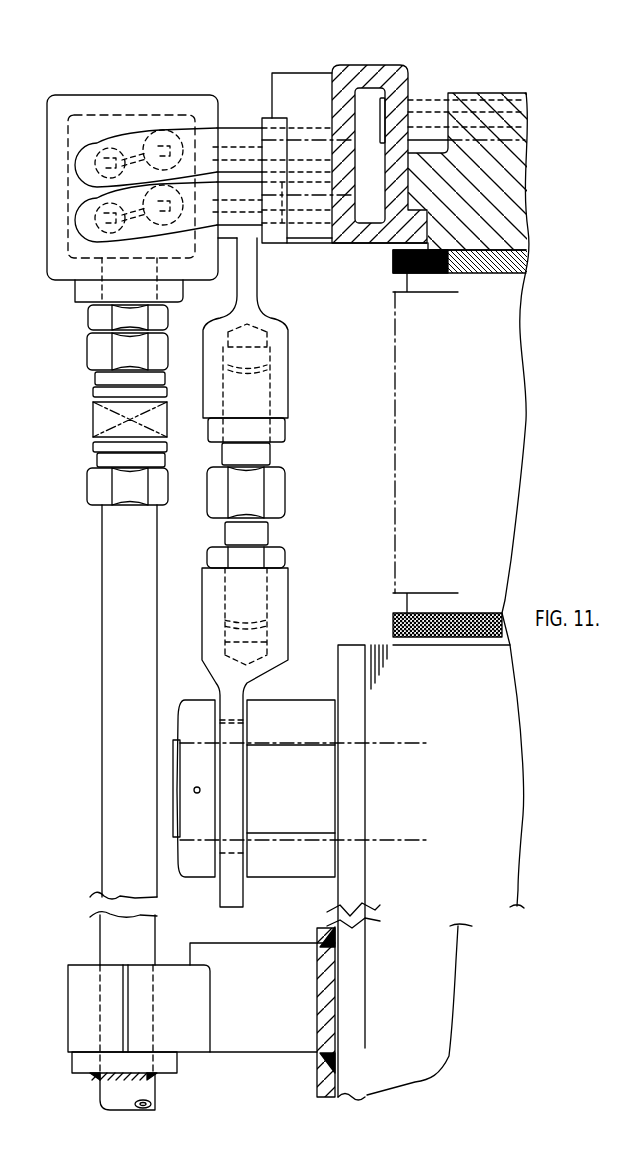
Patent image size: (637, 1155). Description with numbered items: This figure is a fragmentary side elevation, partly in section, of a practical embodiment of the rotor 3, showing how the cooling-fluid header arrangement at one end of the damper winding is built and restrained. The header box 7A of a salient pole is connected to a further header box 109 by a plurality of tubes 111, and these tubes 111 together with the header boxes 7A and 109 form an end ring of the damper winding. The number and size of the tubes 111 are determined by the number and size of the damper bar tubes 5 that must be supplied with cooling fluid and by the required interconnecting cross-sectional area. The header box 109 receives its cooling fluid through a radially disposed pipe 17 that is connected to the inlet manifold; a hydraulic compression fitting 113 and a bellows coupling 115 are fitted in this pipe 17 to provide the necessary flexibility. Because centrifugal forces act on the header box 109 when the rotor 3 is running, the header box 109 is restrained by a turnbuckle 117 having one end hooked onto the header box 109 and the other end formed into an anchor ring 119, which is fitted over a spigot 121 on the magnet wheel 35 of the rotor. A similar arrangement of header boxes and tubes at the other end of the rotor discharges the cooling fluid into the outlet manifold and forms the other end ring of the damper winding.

The rotor 3 is at (446, 456).
The damper bar tube 5 is at (438, 108).
The header box 7A is at (405, 92).
The radially disposed pipe 17 is at (103, 672).
The magnet wheel 35 is at (362, 880).
The header box 109 is at (86, 105).
The tube 111 is at (240, 132).
The hydraulic compression fitting 113 is at (96, 487).
The bellows coupling 115 is at (94, 420).
The turnbuckle 117 is at (277, 493).
The anchor ring 119 is at (195, 870).
The spigot 121 is at (268, 868).